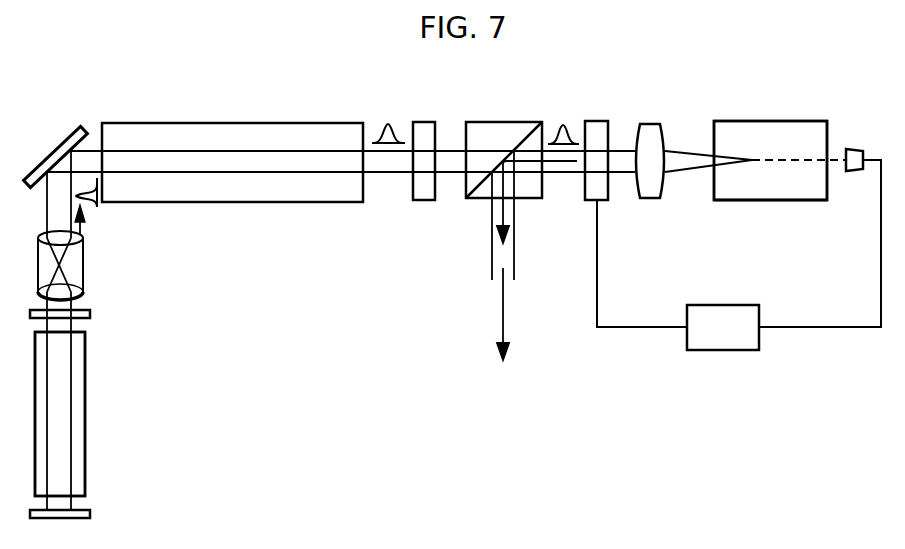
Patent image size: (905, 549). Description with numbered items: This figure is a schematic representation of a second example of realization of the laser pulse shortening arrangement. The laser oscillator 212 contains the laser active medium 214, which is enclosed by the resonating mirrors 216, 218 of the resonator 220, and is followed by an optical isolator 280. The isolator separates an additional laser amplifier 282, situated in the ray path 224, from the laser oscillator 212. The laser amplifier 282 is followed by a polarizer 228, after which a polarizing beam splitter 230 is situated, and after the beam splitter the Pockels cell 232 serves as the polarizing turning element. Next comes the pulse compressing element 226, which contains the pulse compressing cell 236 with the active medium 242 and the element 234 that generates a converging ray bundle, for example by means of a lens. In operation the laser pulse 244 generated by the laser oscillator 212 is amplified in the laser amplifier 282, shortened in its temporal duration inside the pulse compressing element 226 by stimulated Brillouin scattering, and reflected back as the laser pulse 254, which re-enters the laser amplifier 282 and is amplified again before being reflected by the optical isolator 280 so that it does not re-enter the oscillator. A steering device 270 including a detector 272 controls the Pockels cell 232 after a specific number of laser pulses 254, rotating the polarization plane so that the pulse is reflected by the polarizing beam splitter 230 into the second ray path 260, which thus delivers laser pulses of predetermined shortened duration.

The laser oscillator 212 is at (100, 425).
The laser active medium 214 is at (78, 472).
The resonating mirror 216 is at (90, 512).
The resonating mirror 218 is at (90, 315).
The resonator 220 is at (102, 375).
The ray path 224 is at (304, 165).
The pulse compressing element 226 is at (730, 112).
The polarizer 228 is at (428, 128).
The polarizing beam splitter 230 is at (483, 128).
The Pockels cell 232 is at (596, 128).
The element generating a converging ray bundle 234 is at (650, 130).
The pulse compressing cell 236 is at (800, 200).
The active medium 242 is at (795, 128).
The laser pulse 244 is at (388, 124).
The laser pulse 254 is at (563, 125).
The second ray path 260 is at (500, 256).
The steering device 270 is at (697, 342).
The detector 272 is at (852, 148).
The optical isolator 280 is at (80, 268).
The laser amplifier 282 is at (158, 128).